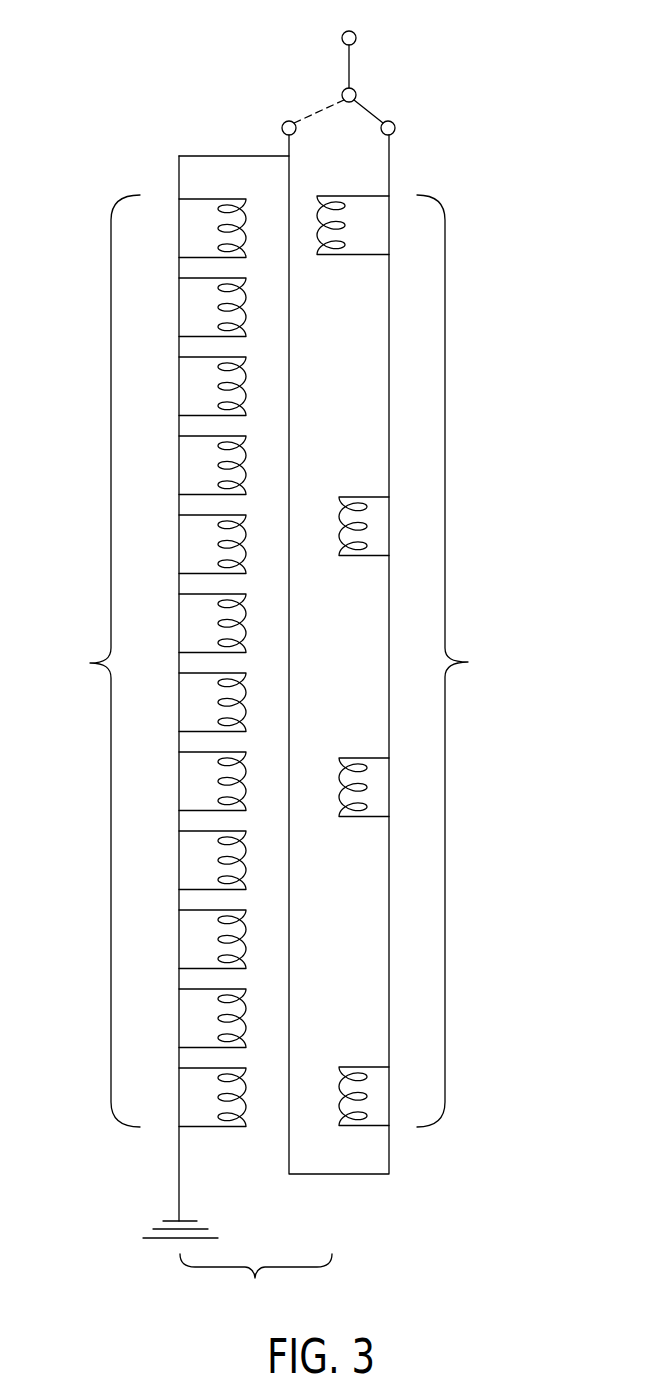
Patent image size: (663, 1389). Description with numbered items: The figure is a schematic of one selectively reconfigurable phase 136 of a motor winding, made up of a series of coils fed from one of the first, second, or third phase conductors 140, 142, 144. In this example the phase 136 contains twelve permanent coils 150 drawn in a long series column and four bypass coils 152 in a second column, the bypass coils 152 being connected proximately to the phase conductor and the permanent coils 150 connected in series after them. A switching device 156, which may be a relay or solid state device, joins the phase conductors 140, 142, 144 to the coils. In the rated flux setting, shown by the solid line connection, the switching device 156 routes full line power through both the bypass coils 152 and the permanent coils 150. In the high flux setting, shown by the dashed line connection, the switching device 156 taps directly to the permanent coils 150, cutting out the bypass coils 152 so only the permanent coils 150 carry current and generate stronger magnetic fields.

The phase 136 is at (237, 1269).
The first phase conductor 140 is at (357, 34).
The second phase conductor 142 is at (429, 44).
The third phase conductor 144 is at (429, 44).
The permanent coils 150 is at (90, 663).
The bypass coils 152 is at (468, 662).
The switching device 156 is at (341, 91).